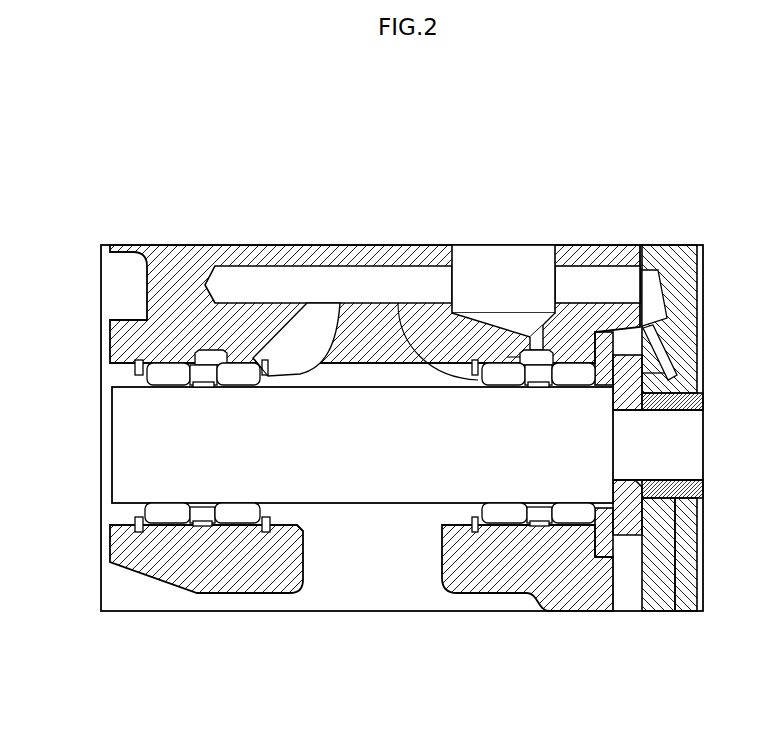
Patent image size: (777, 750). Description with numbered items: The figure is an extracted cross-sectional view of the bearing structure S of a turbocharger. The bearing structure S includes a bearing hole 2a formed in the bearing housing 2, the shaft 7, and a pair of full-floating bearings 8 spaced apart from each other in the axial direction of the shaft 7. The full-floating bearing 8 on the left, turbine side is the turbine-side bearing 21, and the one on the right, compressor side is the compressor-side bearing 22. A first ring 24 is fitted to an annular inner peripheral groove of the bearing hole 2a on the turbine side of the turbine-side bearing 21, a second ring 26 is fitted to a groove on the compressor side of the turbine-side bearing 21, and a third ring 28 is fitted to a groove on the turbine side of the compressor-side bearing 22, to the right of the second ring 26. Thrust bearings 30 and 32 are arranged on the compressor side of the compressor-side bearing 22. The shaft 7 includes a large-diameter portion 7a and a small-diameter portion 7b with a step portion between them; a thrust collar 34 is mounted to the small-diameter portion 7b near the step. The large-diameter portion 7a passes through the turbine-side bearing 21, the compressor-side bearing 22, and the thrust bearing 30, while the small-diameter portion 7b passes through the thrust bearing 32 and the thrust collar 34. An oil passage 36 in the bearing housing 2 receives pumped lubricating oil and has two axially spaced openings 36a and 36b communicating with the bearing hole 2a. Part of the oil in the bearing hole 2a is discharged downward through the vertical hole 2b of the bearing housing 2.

The bearing structure S is at (107, 109).
The bearing housing 2 is at (485, 593).
The bearing hole 2a is at (305, 522).
The vertical hole 2b is at (308, 565).
The shaft 7 is at (378, 503).
The large-diameter portion 7a is at (420, 503).
The small-diameter portion 7b is at (676, 611).
The full-floating bearing 8 is at (168, 354).
The turbine-side bearing 21 is at (331, 300).
The compressor-side bearing 22 is at (398, 303).
The first ring 24 is at (137, 520).
The second ring 26 is at (267, 517).
The third ring 28 is at (476, 517).
The thrust bearing 30 is at (622, 337).
The thrust bearing 32 is at (655, 245).
The thrust collar 34 is at (625, 535).
The oil passage 36 is at (239, 268).
The opening 36a is at (243, 371).
The opening 36b is at (516, 370).